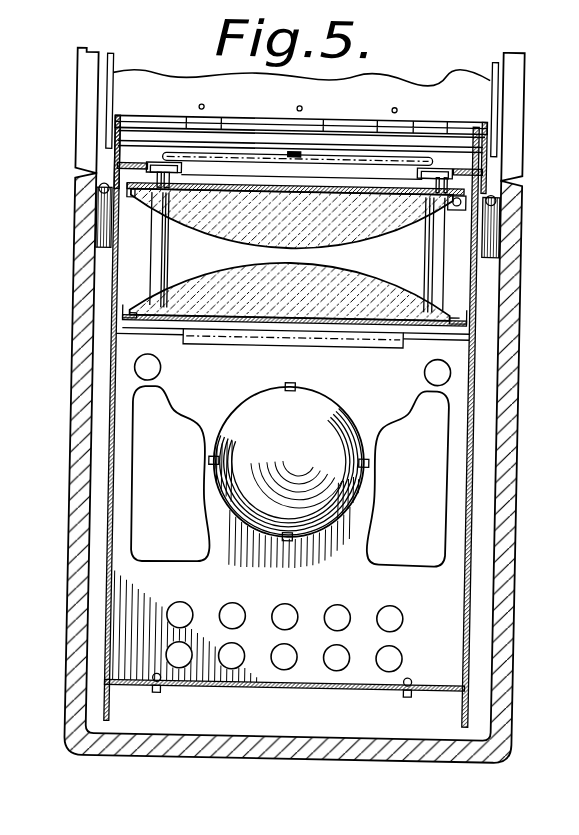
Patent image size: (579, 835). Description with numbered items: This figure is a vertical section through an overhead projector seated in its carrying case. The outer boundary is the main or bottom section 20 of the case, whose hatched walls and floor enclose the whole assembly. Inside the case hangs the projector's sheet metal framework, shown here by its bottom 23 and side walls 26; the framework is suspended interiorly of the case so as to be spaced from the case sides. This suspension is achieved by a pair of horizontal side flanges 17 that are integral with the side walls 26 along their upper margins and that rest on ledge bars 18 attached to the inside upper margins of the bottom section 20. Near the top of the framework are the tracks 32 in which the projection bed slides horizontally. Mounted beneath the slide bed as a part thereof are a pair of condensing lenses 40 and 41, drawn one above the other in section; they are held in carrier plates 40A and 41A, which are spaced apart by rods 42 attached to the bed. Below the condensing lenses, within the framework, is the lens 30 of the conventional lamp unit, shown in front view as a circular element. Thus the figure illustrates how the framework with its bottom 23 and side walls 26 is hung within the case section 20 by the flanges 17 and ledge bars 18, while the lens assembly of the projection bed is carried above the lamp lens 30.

The horizontal side flanges 17 is at (0, 188).
The ledge bars 18 is at (0, 219).
The main or bottom section 20 is at (75, 304).
The bottom 23 is at (262, 694).
The side walls 26 is at (112, 331).
The lens 30 is at (294, 431).
The tracks 32 is at (115, 168).
The condensing lens 40 is at (253, 265).
The carrier plate 40A is at (451, 304).
The condensing lens 41 is at (393, 231).
The carrier plate 41A is at (452, 202).
The rods 42 is at (160, 243).